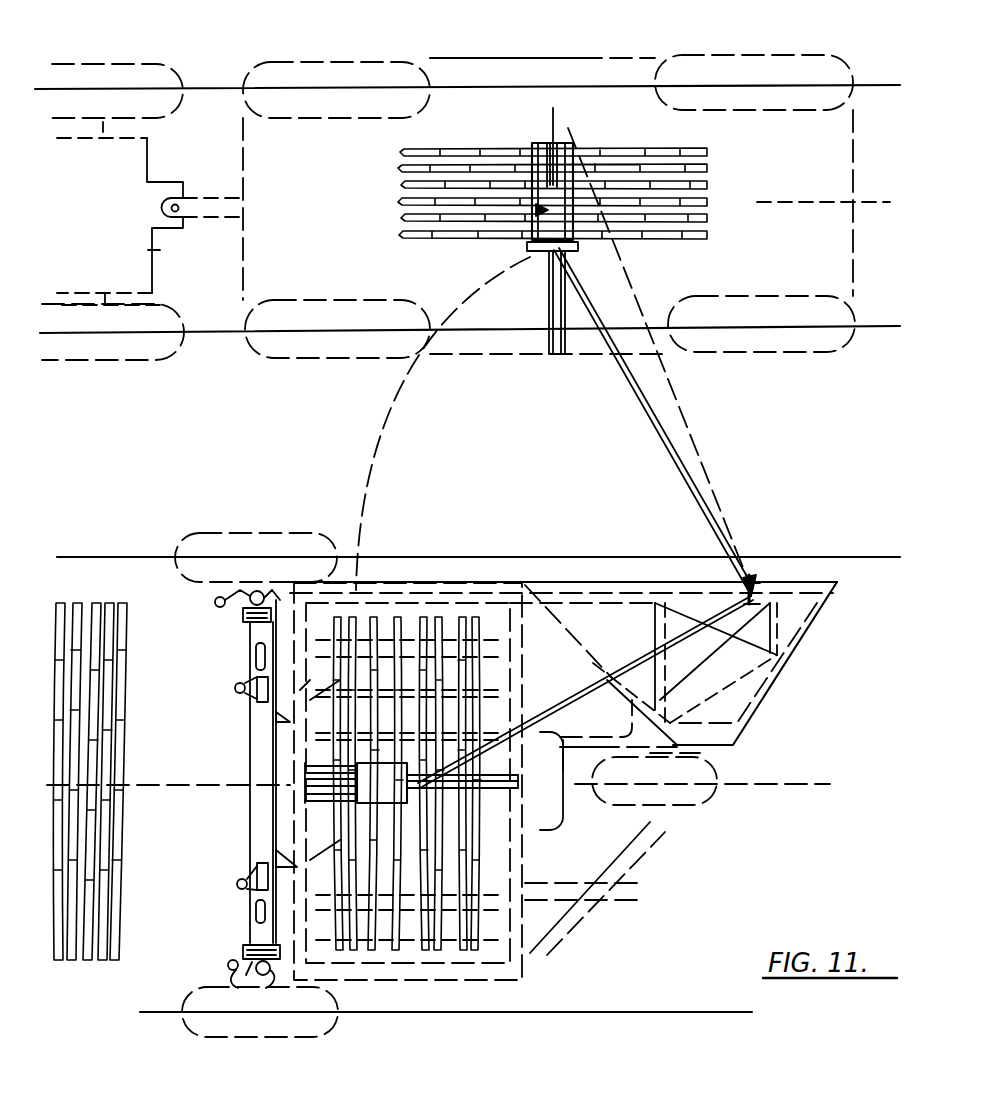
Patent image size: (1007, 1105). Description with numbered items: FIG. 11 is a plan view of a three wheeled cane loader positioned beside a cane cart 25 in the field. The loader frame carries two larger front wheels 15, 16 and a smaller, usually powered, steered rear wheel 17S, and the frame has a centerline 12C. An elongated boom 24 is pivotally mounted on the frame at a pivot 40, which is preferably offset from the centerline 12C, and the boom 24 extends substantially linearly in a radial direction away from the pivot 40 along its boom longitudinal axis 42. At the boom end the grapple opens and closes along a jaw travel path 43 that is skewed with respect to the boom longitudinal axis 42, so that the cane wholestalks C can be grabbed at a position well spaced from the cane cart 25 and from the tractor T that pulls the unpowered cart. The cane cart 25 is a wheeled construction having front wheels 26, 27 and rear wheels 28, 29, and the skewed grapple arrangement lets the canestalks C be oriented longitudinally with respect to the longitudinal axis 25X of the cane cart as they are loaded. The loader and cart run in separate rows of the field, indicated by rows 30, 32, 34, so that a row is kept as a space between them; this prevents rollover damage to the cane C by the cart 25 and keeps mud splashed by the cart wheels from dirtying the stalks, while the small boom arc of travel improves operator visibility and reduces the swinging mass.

The centerline of the frame 12C is at (807, 782).
The front left wheel 15 is at (200, 985).
The front right wheel 16 is at (208, 532).
The steered rear wheel 17S is at (720, 820).
The boom 24 is at (690, 490).
The cane cart 25 is at (577, 52).
The longitudinal axis of the cane cart 25X is at (815, 199).
The front wheel of cane cart 26 is at (322, 370).
The front wheel of cane cart 27 is at (328, 46).
The rear wheel of cane cart 28 is at (806, 358).
The rear wheel of cane cart 29 is at (766, 52).
The row 30 is at (210, 63).
The row 32 is at (214, 347).
The row 34 is at (850, 556).
The pivot 40 is at (768, 578).
The boom longitudinal axis 42 is at (642, 398).
The jaw travel path 43 is at (535, 250).
The cane wholestalks C is at (408, 186).
The tractor T is at (96, 62).